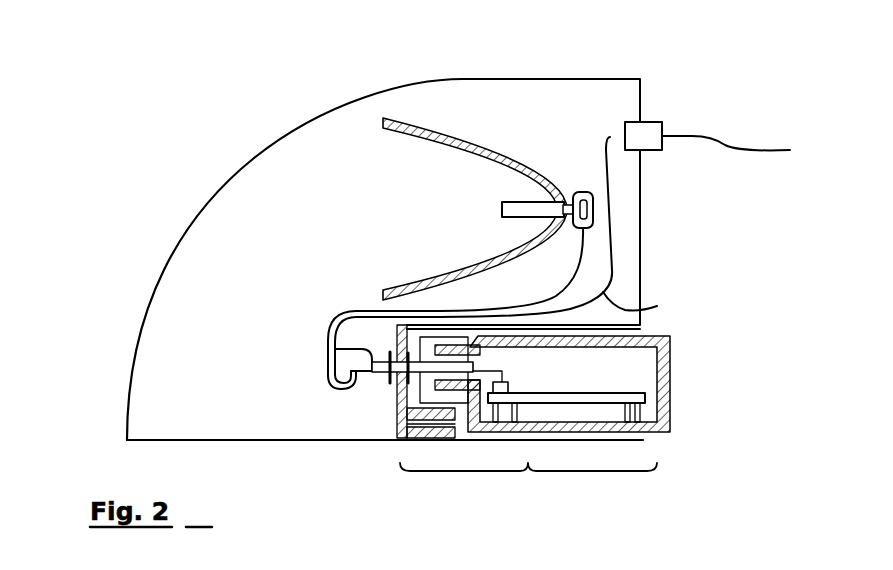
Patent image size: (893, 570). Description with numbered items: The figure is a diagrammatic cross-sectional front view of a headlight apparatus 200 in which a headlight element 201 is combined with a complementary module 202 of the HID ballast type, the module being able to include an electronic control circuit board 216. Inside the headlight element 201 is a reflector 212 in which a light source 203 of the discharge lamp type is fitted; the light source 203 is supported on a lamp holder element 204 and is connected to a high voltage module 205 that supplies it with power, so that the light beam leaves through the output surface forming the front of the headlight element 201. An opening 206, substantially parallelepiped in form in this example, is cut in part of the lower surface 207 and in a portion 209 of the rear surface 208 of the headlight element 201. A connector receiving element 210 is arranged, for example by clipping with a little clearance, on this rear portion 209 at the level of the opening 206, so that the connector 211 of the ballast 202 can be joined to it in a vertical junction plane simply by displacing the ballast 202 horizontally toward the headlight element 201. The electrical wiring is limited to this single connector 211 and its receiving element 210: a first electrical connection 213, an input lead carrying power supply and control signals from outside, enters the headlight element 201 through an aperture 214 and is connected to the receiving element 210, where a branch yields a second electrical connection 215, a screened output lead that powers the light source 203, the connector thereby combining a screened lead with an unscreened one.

The apparatus 200 is at (748, 121).
The headlight element 201 is at (140, 413).
The complementary module 202 is at (653, 360).
The light source 203 is at (516, 202).
The lamp holder element 204 is at (572, 193).
The high voltage module 205 is at (592, 193).
The opening 206 is at (528, 484).
The lower surface 207 is at (280, 441).
The rear surface 208 is at (641, 232).
The rear portion 209 is at (397, 422).
The connector receiving element 210 is at (335, 355).
The connector 211 is at (488, 364).
The reflector 212 is at (432, 126).
The first electrical connection 213 is at (734, 151).
The aperture 214 is at (656, 122).
The second electrical connection 215 is at (333, 334).
The electronic control circuit board 216 is at (616, 377).